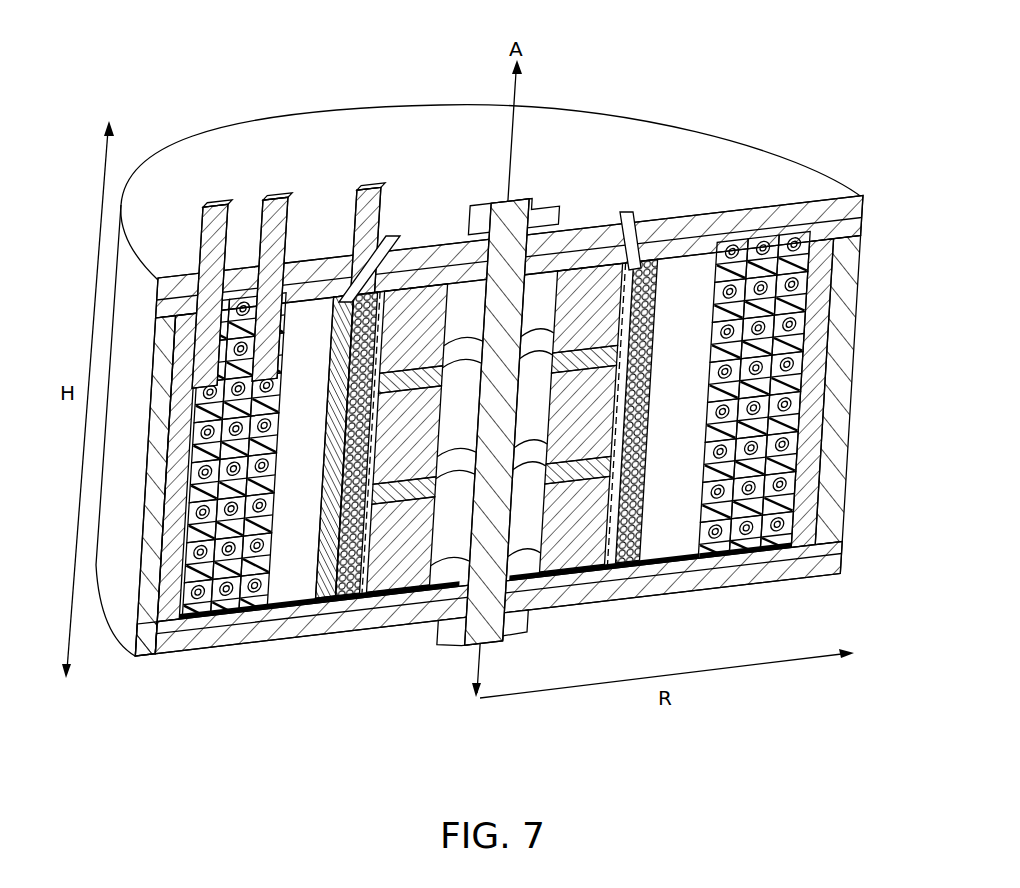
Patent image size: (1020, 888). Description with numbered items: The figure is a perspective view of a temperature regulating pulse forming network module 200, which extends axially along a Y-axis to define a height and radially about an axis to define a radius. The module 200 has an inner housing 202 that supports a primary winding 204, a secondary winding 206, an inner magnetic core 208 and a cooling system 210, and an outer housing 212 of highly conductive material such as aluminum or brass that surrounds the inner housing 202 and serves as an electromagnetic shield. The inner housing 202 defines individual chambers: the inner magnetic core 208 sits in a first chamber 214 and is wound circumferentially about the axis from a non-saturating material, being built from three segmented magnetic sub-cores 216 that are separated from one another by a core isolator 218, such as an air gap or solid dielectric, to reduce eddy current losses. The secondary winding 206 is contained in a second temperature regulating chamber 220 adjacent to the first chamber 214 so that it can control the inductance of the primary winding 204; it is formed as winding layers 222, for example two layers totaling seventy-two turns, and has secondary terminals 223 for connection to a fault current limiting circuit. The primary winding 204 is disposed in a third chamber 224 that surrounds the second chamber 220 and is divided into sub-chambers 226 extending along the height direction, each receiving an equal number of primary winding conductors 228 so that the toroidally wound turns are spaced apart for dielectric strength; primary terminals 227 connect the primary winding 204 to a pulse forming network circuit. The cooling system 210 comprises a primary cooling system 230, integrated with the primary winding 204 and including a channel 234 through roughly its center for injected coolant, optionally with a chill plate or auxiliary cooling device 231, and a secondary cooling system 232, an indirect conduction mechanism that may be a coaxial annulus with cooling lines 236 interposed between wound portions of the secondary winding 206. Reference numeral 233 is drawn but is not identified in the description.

The temperature regulating pulse forming network (TRPFN) module 200 is at (158, 76).
The inner housing 202 is at (440, 600).
The primary winding 204 is at (286, 331).
The secondary winding 206 is at (334, 434).
The inner magnetic core 208 is at (586, 262).
The cooling system 210 is at (700, 575).
The outer housing 212 is at (300, 135).
The first chamber 214 is at (530, 580).
The segmented magnetic sub-cores 216 is at (430, 339).
The core isolator 218 is at (342, 364).
The second temperature regulating chamber 220 is at (299, 592).
The winding layers 222 is at (348, 595).
The secondary terminals 223 is at (368, 188).
The third chamber 224 is at (155, 657).
The sub-chambers 226 is at (177, 620).
The primary terminals 227 is at (222, 200).
The primary winding conductor 228 is at (335, 512).
The primary cooling system 230 is at (708, 401).
The auxiliary cooling device 231 is at (281, 645).
The secondary cooling system 232 is at (655, 545).
The base plate 233 is at (616, 568).
The channel 234 is at (723, 553).
The cooling lines 236 is at (628, 210).